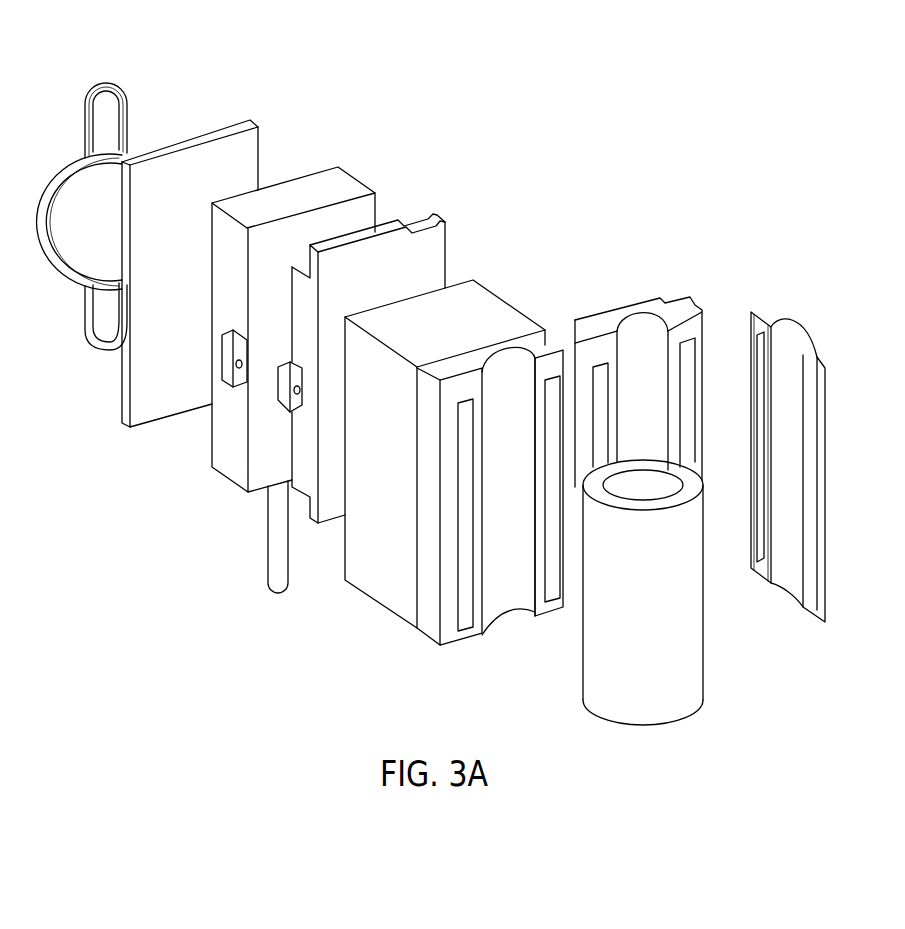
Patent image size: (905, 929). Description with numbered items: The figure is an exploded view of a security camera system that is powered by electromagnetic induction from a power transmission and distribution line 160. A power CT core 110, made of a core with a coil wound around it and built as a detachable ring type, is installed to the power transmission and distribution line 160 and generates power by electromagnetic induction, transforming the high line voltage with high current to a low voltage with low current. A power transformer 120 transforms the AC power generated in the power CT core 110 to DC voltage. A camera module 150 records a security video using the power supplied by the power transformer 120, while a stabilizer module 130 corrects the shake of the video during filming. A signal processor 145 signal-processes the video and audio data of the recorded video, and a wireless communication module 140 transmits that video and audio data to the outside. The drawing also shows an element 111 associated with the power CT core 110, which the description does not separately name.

The power CT core 110 is at (655, 308).
The cover shell 111 is at (763, 313).
The power transformer 120 is at (493, 312).
The stabilizer module 130 is at (432, 218).
The wireless communication module 140 is at (347, 186).
The signal processor 145 is at (242, 120).
The camera module 150 is at (105, 83).
The power transmission and distribution line 160 is at (690, 662).